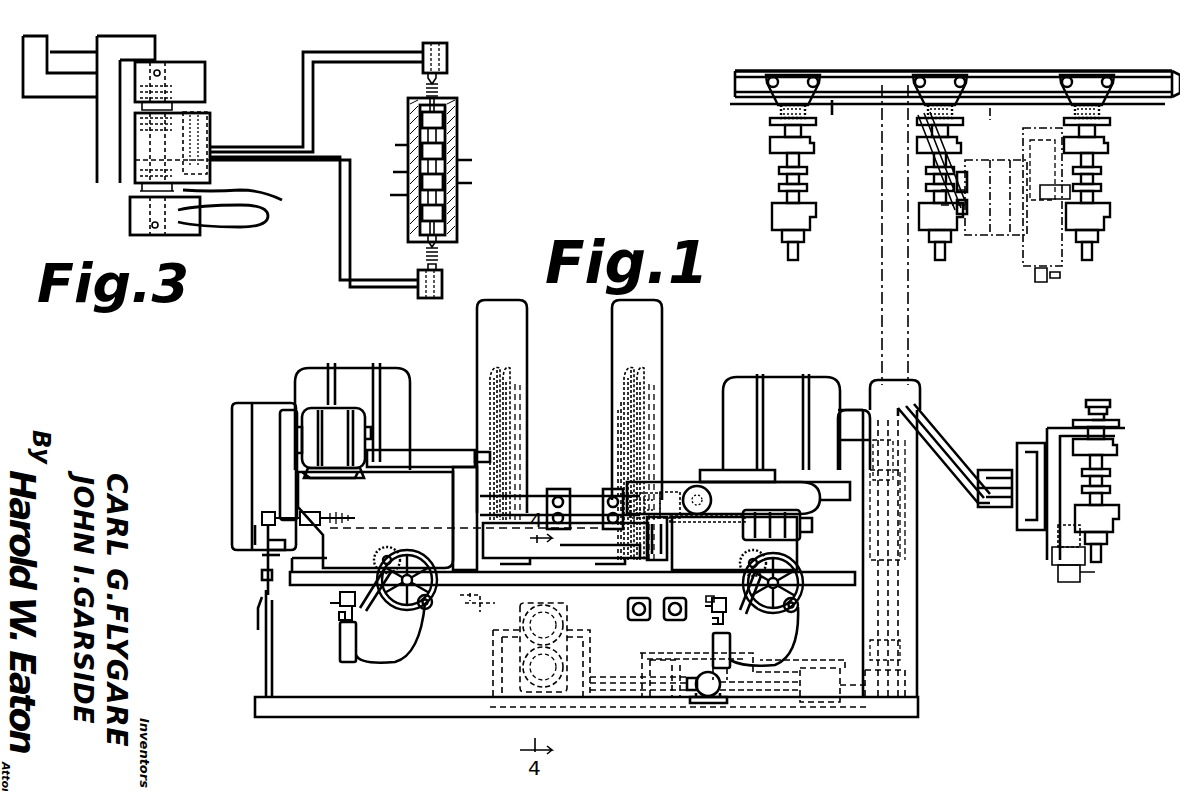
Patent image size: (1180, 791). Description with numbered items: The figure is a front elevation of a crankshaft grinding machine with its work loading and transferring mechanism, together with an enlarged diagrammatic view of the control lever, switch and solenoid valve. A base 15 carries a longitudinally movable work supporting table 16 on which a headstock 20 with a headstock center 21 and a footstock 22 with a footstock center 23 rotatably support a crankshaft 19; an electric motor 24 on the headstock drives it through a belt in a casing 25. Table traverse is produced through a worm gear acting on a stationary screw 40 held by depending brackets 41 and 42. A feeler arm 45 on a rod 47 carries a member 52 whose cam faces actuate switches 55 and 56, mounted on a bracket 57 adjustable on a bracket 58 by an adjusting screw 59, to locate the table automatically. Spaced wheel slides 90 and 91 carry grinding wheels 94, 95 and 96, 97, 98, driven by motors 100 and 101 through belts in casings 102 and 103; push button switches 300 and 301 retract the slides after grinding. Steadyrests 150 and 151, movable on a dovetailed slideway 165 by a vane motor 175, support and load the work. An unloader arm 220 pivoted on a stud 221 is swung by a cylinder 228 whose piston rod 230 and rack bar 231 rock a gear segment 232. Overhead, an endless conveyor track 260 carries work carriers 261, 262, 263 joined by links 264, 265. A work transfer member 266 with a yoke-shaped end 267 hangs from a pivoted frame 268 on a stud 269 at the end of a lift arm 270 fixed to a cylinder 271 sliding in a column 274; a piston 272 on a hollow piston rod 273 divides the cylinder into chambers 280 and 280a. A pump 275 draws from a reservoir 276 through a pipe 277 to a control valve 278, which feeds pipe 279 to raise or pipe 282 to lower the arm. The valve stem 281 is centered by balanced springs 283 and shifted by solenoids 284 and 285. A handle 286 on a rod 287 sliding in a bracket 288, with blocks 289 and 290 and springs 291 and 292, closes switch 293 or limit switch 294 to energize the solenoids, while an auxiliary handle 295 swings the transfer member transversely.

In FIG. 1, the base 15 is at (410, 712).
In FIG. 1, the work supporting table 16 is at (868, 584).
In FIG. 1, the work piece (crankshaft) 19 is at (770, 203).
In FIG. 1, the headstock 20 is at (425, 470).
In FIG. 1, the headstock center 21 is at (478, 490).
In FIG. 1, the footstock 22 is at (738, 480).
In FIG. 1, the footstock center 23 is at (662, 495).
In FIG. 1, the electric motor 24 is at (340, 416).
In FIG. 1, the casing 25 is at (288, 412).
In FIG. 1, the stationary screw 40 is at (486, 622).
In FIG. 1, the depending bracket 41 is at (462, 605).
In FIG. 1, the depending bracket 42 is at (628, 616).
In FIG. 1, the feeler arm 45 is at (565, 543).
In FIG. 1, the rod 47 is at (408, 535).
In FIG. 1, the member 52 is at (262, 513).
In FIG. 1, the electric switch 55 is at (255, 532).
In FIG. 1, the electric switch 56 is at (282, 548).
In FIG. 1, the bracket 57 is at (258, 558).
In FIG. 1, the bracket 58 is at (272, 578).
In FIG. 1, the adjusting screw 59 is at (262, 582).
In FIG. 1, the grinding wheel slide 90 is at (468, 500).
In FIG. 1, the grinding wheel slide 91 is at (710, 478).
In FIG. 1, the grinding wheel 94 is at (484, 388).
In FIG. 1, the grinding wheel 95 is at (508, 395).
In FIG. 1, the grinding wheel 96 is at (620, 419).
In FIG. 1, the grinding wheel 97 is at (622, 373).
In FIG. 1, the grinding wheel 98 is at (645, 381).
In FIG. 1, the electric motor 100 is at (357, 368).
In FIG. 1, the electric motor 101 is at (790, 377).
In FIG. 1, the casing 102 is at (240, 414).
In FIG. 1, the casing 103 is at (856, 410).
In FIG. 1, the steadyrest 150 is at (556, 490).
In FIG. 1, the steadyrest 151 is at (606, 490).
In FIG. 1, the dovetailed slideway 165 is at (600, 542).
In FIG. 1, the fluid motor 175 is at (808, 586).
In FIG. 1, the unloader arm 220 is at (641, 526).
In FIG. 1, the stud 221 is at (697, 486).
In FIG. 1, the fluid pressure cylinder 228 is at (790, 520).
In FIG. 1, the piston rod 230 is at (742, 545).
In FIG. 1, the rack bar 231 is at (707, 528).
In FIG. 1, the gear segment 232 is at (726, 494).
In FIG. 1, the endless conveyor track 260 is at (738, 74).
In FIG. 1, the work carrier member 261 is at (1040, 104).
In FIG. 1, the work carrier member 262 is at (922, 110).
In FIG. 1, the work carrier member 263 is at (772, 110).
In FIG. 1, the link 264 is at (990, 108).
In FIG. 1, the link 265 is at (832, 104).
In FIG. 3, the work transfer member 266 is at (100, 115).
In FIG. 1, the work transfer member 266 is at (1060, 430).
In FIG. 1, the yoke-shaped end 267 is at (1122, 428).
In FIG. 1, the pivotally mounted frame 268 is at (1018, 452).
In FIG. 1, the stud 269 is at (982, 510).
In FIG. 1, the lift arm 270 is at (936, 406).
In FIG. 1, the fluid pressure cylinder 271 is at (900, 410).
In FIG. 1, the piston 272 is at (900, 497).
In FIG. 1, the hollow piston rod 273 is at (893, 610).
In FIG. 1, the column 274 is at (910, 480).
In FIG. 1, the fluid pressure pump 275 is at (708, 700).
In FIG. 1, the reservoir 276 is at (628, 712).
In FIG. 1, the pipe 277 is at (676, 712).
In FIG. 3, the solenoid actuated control valve 278 is at (466, 211).
In FIG. 1, the solenoid actuated control valve 278 is at (812, 702).
In FIG. 3, the pipe 279 is at (470, 183).
In FIG. 1, the pipe 279 is at (868, 702).
In FIG. 1, the cylinder chamber 280 is at (880, 473).
In FIG. 1, the cylinder chamber 280a is at (898, 653).
In FIG. 3, the valve stem 281 is at (455, 240).
In FIG. 3, the pipe 282 is at (457, 160).
In FIG. 1, the pipe 282 is at (848, 668).
In FIG. 3, the balanced springs 283 is at (443, 90).
In FIG. 3, the solenoid 284 is at (447, 280).
In FIG. 3, the solenoid 285 is at (448, 60).
In FIG. 3, the manually operable handle 286 is at (250, 222).
In FIG. 3, the vertically movable rod 287 is at (147, 143).
In FIG. 3, the bracket 288 is at (135, 160).
In FIG. 3, the block 289 is at (203, 75).
In FIG. 3, the block 290 is at (130, 216).
In FIG. 3, the compression spring 291 is at (178, 100).
In FIG. 3, the compression spring 292 is at (142, 193).
In FIG. 3, the switch 293 is at (250, 202).
In FIG. 3, the limit switch 294 is at (190, 110).
In FIG. 1, the auxiliary handle 295 is at (1032, 532).
In FIG. 1, the push button switch 300 is at (680, 620).
In FIG. 1, the push button switch 301 is at (698, 616).